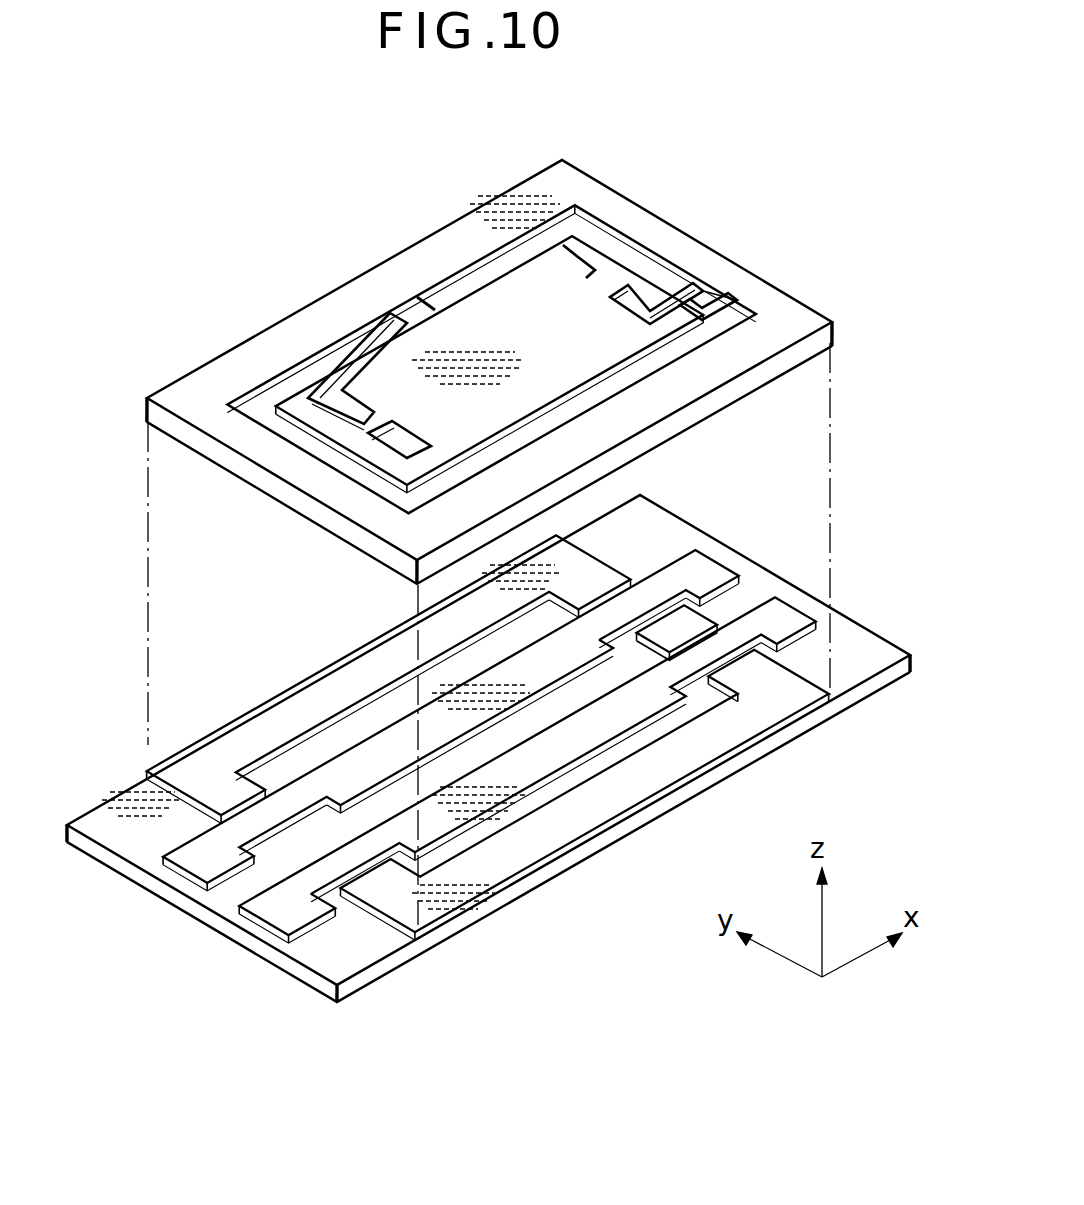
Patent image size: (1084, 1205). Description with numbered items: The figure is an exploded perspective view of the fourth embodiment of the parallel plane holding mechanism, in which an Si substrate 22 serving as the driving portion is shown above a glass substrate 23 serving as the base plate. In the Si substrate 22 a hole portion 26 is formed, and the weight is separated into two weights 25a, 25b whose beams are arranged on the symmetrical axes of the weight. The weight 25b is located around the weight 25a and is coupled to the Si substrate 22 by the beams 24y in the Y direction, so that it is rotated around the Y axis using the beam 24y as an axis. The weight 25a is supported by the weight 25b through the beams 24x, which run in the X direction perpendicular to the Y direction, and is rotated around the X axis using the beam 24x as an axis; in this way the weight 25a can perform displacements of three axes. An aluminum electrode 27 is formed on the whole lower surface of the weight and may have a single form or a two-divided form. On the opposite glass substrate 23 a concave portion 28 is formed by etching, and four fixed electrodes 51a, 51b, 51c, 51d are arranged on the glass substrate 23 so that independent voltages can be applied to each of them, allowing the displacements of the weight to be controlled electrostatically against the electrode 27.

The Si substrate 22 is at (803, 353).
The glass substrate 23 is at (807, 720).
The beams in the X direction 24x is at (615, 283).
The beams in the Y direction 24y is at (580, 408).
The inner weight 25a is at (600, 330).
The outer weight 25b is at (687, 310).
The hole portion 26 is at (573, 262).
The aluminum electrode 27 is at (317, 397).
The concave portion 28 is at (710, 693).
The fixed electrode 51a is at (363, 757).
The fixed electrode 51b is at (705, 570).
The fixed electrode 51c is at (300, 900).
The fixed electrode 51d is at (598, 723).